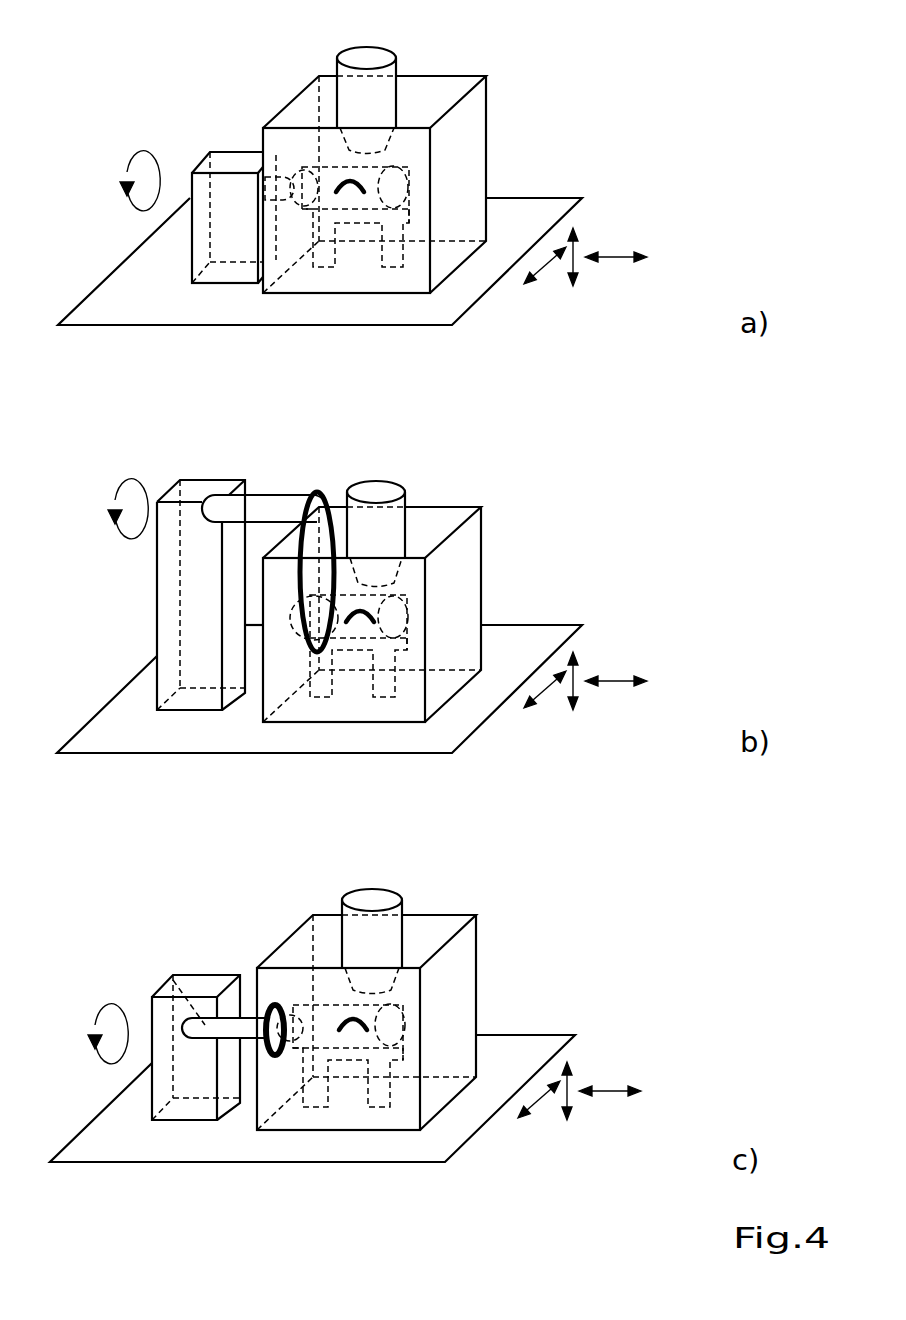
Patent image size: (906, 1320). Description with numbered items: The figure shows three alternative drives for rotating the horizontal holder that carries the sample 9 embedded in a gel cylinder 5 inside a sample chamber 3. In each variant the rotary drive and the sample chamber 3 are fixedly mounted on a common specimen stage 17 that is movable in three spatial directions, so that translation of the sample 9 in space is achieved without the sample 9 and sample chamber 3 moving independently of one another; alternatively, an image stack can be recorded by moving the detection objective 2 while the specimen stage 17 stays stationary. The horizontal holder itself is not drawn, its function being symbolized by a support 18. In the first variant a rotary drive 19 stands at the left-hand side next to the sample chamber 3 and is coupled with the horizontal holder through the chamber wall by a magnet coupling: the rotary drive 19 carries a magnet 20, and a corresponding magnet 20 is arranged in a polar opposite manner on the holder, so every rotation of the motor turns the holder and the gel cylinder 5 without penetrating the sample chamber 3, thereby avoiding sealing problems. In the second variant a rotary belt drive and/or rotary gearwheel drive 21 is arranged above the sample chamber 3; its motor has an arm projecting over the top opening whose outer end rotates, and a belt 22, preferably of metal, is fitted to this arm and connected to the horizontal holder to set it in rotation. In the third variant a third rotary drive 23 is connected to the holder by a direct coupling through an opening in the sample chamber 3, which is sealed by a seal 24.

In FIG. 4a, the detection objective 2 is at (345, 85).
In FIG. 4b, the detection objective 2 is at (367, 487).
In FIG. 4c, the detection objective 2 is at (393, 928).
In FIG. 4a, the sample chamber 3 is at (463, 127).
In FIG. 4b, the sample chamber 3 is at (463, 548).
In FIG. 4c, the sample chamber 3 is at (455, 957).
In FIG. 4a, the gel cylinder 5 is at (393, 185).
In FIG. 4b, the gel cylinder 5 is at (400, 613).
In FIG. 4c, the gel cylinder 5 is at (392, 1022).
In FIG. 4a, the sample 9 is at (362, 185).
In FIG. 4b, the sample 9 is at (372, 614).
In FIG. 4c, the sample 9 is at (347, 1018).
In FIG. 4a, the specimen stage 17 is at (120, 290).
In FIG. 4b, the specimen stage 17 is at (97, 733).
In FIG. 4c, the specimen stage 17 is at (90, 1145).
In FIG. 4a, the support 18 is at (407, 222).
In FIG. 4b, the support 18 is at (402, 647).
In FIG. 4c, the support 18 is at (395, 1057).
In FIG. 4a, the rotary drive 19 is at (192, 173).
In FIG. 4a, the magnet 20 is at (300, 168).
In FIG. 4b, the rotary belt drive and/or rotary gearwheel drive 21 is at (208, 522).
In FIG. 4b, the belt 22 is at (298, 523).
In FIG. 4c, the third rotary drive 23 is at (167, 978).
In FIG. 4c, the seal 24 is at (257, 1007).